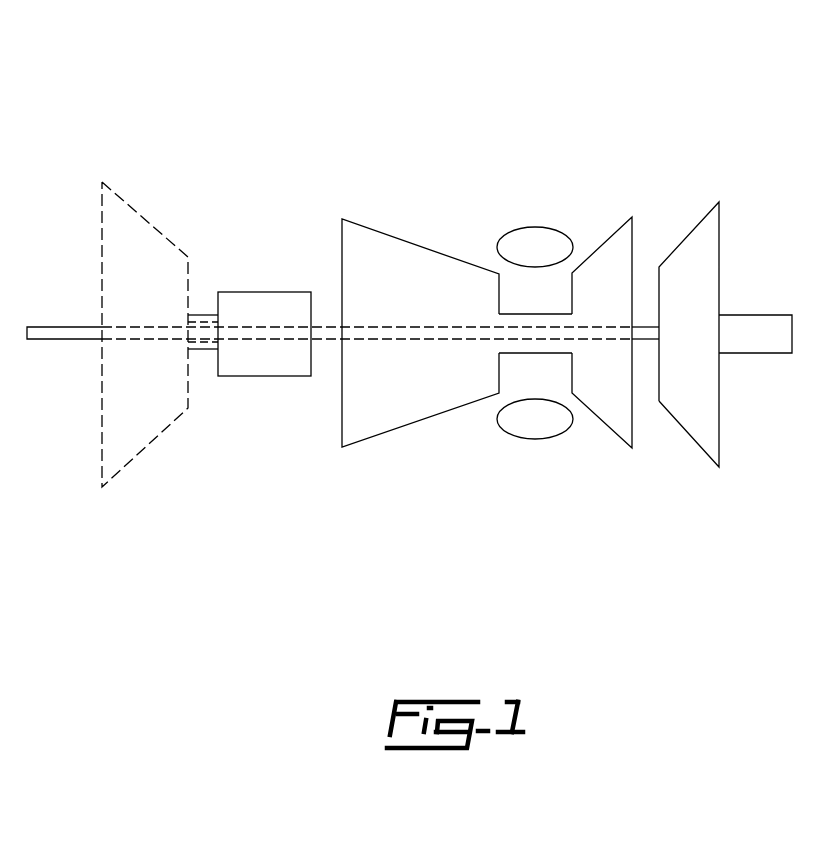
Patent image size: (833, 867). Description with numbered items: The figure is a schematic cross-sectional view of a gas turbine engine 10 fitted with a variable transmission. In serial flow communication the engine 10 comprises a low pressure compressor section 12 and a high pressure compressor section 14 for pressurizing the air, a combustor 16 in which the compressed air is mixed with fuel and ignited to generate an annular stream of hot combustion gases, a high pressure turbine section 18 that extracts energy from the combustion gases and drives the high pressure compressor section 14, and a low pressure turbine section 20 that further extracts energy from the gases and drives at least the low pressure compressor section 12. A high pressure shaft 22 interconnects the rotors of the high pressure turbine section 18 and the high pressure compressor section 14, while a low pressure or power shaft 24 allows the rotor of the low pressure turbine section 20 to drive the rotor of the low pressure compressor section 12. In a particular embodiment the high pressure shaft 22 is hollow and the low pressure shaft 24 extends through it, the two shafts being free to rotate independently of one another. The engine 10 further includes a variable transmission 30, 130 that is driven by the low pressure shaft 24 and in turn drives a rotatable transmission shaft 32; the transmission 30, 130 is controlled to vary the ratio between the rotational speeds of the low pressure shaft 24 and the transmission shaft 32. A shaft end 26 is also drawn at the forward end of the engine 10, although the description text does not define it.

The gas turbine engine 10 is at (374, 119).
The low pressure compressor section 12 is at (156, 187).
The high pressure compressor section 14 is at (421, 223).
The combustor 16 is at (542, 208).
The high pressure turbine section 18 is at (613, 211).
The low pressure turbine section 20 is at (741, 205).
The high pressure shaft 22 is at (547, 354).
The low pressure shaft 24 is at (647, 340).
The fan shaft 26 is at (52, 333).
The variable transmission 30 is at (284, 263).
The variable transmission 130 is at (266, 266).
The transmission shaft 32 is at (203, 352).